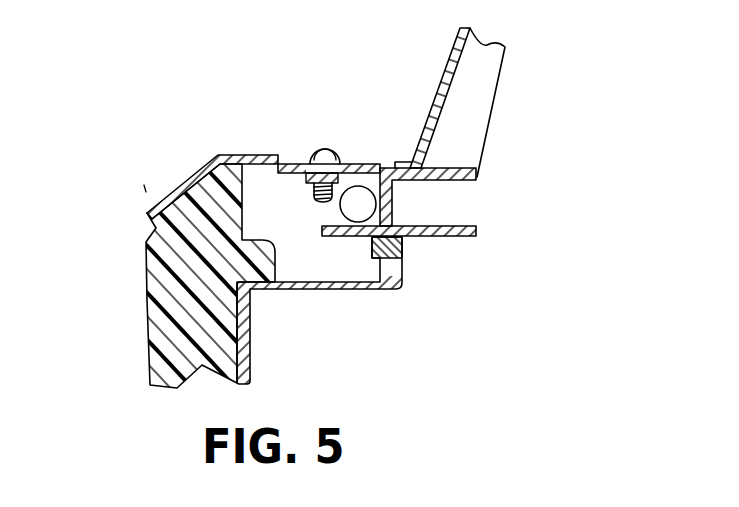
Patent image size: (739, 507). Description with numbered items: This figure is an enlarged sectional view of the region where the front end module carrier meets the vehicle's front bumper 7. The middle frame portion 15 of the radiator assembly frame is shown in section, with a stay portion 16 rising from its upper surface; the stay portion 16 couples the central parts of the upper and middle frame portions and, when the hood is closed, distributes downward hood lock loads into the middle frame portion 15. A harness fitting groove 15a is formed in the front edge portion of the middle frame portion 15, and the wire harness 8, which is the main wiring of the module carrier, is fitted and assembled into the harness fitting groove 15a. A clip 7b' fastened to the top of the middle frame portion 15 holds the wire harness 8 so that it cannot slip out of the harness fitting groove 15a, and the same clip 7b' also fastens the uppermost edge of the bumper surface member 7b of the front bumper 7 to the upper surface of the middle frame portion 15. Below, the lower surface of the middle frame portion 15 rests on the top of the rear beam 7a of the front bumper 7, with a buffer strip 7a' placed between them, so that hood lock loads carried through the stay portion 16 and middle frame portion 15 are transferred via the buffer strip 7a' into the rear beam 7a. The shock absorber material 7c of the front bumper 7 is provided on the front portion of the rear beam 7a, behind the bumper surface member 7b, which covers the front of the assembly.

The front bumper 7 is at (175, 175).
The rear beam 7a is at (245, 312).
The buffer strip 7a' is at (429, 258).
The bumper surface member 7b is at (263, 156).
The clip 7b' is at (317, 129).
The shock absorber material 7c is at (175, 260).
The wire harness 8 is at (350, 207).
The middle frame portion 15 is at (368, 166).
The harness fitting groove 15a is at (323, 207).
The stay portion 16 is at (442, 82).